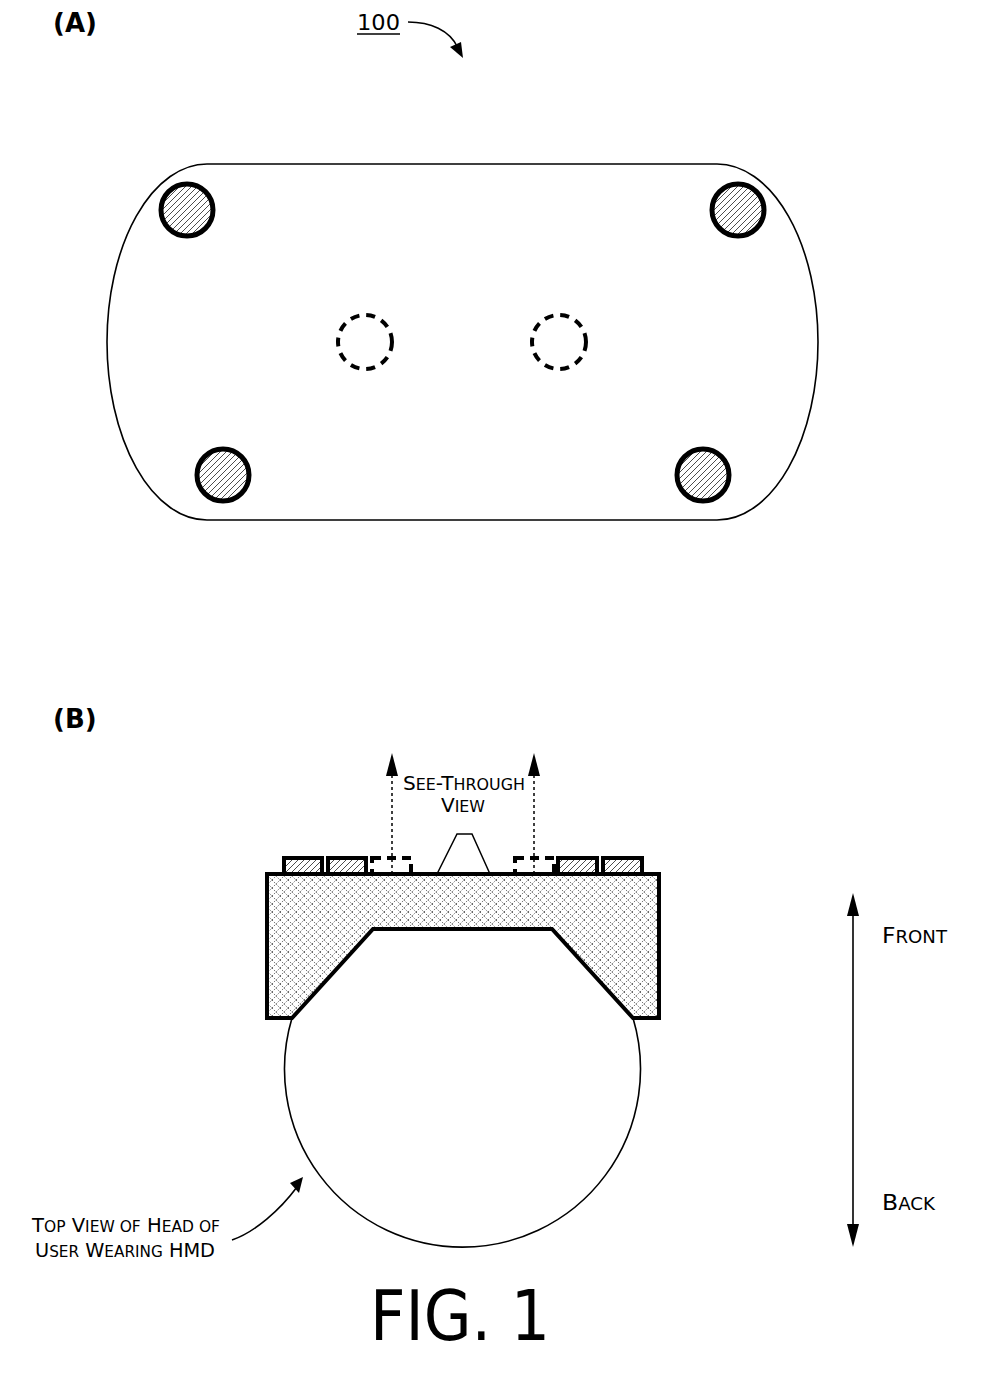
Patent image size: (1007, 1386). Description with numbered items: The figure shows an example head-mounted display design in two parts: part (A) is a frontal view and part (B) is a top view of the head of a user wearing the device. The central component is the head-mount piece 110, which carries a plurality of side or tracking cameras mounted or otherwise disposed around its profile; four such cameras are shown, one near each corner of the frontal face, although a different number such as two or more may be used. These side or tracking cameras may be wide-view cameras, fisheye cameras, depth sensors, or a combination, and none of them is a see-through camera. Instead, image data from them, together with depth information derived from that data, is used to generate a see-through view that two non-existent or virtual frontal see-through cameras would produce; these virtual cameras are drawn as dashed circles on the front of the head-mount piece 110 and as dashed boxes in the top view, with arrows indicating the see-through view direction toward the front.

The head-mount piece 110 is at (463, 164).